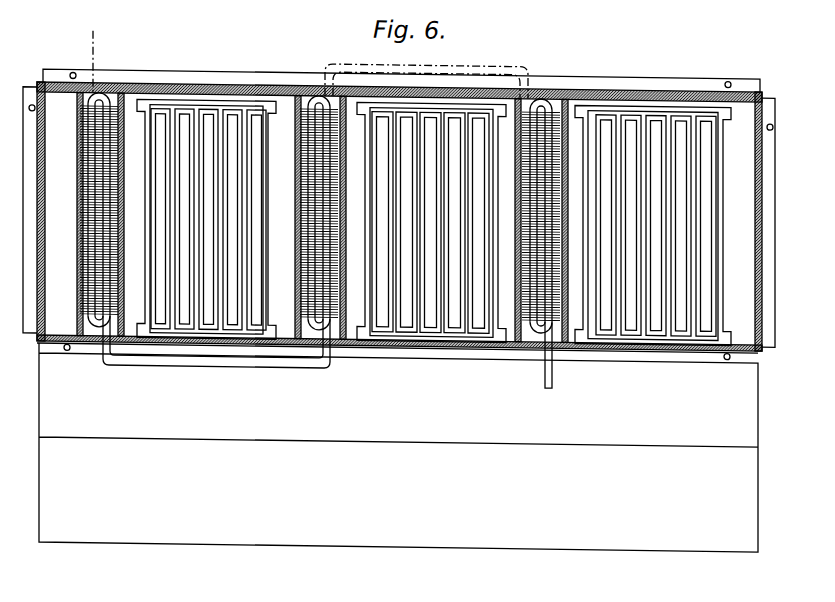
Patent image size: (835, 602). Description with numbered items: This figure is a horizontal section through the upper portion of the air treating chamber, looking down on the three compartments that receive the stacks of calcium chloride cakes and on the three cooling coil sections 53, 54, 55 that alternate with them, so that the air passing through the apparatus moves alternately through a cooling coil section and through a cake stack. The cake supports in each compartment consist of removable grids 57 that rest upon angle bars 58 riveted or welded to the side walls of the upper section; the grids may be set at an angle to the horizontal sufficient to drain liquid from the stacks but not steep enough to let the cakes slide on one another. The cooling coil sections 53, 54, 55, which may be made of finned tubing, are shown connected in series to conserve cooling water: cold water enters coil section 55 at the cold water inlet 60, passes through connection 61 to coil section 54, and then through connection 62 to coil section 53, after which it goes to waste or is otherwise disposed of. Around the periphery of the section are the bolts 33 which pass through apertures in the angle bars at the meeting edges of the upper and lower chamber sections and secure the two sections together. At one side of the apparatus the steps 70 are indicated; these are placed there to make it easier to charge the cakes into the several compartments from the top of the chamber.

The bolts 33 is at (32, 104).
The cooling coil section 53 is at (106, 89).
The cooling coil section 54 is at (313, 88).
The cooling coil section 55 is at (536, 318).
The removable grids 57 is at (267, 200).
The angle bars 58 is at (292, 89).
The cold water inlet 60 is at (548, 381).
The connection 61 is at (473, 64).
The connection 62 is at (326, 363).
The steps 70 is at (642, 538).